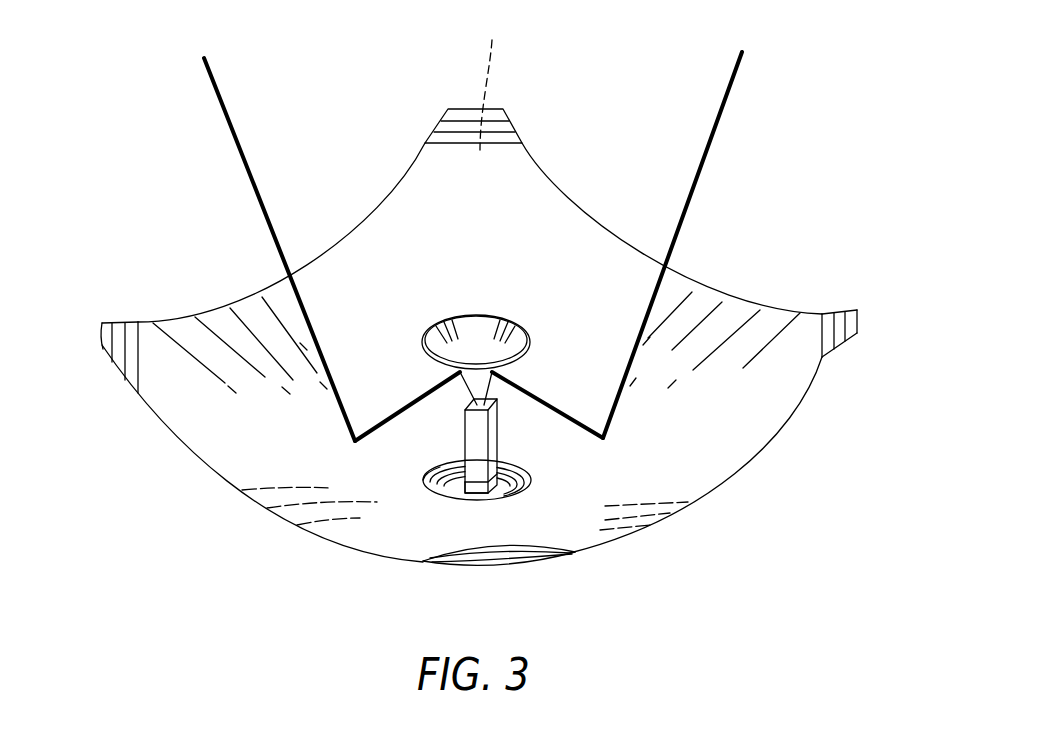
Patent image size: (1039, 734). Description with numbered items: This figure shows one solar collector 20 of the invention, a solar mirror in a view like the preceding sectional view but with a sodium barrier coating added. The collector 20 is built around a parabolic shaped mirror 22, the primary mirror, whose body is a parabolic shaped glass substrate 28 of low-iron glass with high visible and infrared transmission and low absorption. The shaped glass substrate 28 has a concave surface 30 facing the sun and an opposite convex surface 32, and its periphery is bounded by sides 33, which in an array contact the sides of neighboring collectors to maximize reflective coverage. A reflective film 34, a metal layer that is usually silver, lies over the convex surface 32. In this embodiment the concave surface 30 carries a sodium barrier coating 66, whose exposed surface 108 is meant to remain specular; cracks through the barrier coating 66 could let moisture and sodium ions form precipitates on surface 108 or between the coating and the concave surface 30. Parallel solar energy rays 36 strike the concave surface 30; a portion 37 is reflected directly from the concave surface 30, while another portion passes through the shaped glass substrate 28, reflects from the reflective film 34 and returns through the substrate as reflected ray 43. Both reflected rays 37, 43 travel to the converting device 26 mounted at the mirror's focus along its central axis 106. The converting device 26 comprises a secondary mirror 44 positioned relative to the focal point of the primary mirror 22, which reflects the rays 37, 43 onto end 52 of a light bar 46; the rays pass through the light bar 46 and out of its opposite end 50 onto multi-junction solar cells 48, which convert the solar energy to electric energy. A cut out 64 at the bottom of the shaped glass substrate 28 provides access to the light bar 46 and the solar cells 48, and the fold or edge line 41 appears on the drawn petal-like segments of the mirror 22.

The solar collector 20 is at (758, 138).
The parabolic shaped mirror 22 is at (587, 207).
The converting device 26 is at (453, 472).
The shaped glass substrate 28 is at (435, 137).
The concave surface 30 is at (132, 357).
The convex surface 32 is at (500, 112).
The sides 33 is at (360, 217).
The reflective film 34 is at (448, 112).
The solar energy rays 36 is at (338, 410).
The reflected ray portion 37 is at (427, 395).
The reflected ray 43 is at (530, 397).
The petal fold line 41 is at (437, 124).
The secondary mirror 44 is at (472, 318).
The light bar 46 is at (493, 440).
The multi-junction solar cells 48 is at (482, 493).
The end of the light bar 50 is at (472, 493).
The end of the light bar 52 is at (490, 408).
The cut out 64 is at (527, 492).
The sodium barrier coating 66 is at (465, 122).
The central axis 106 is at (490, 82).
The surface of the barrier coating 108 is at (490, 220).